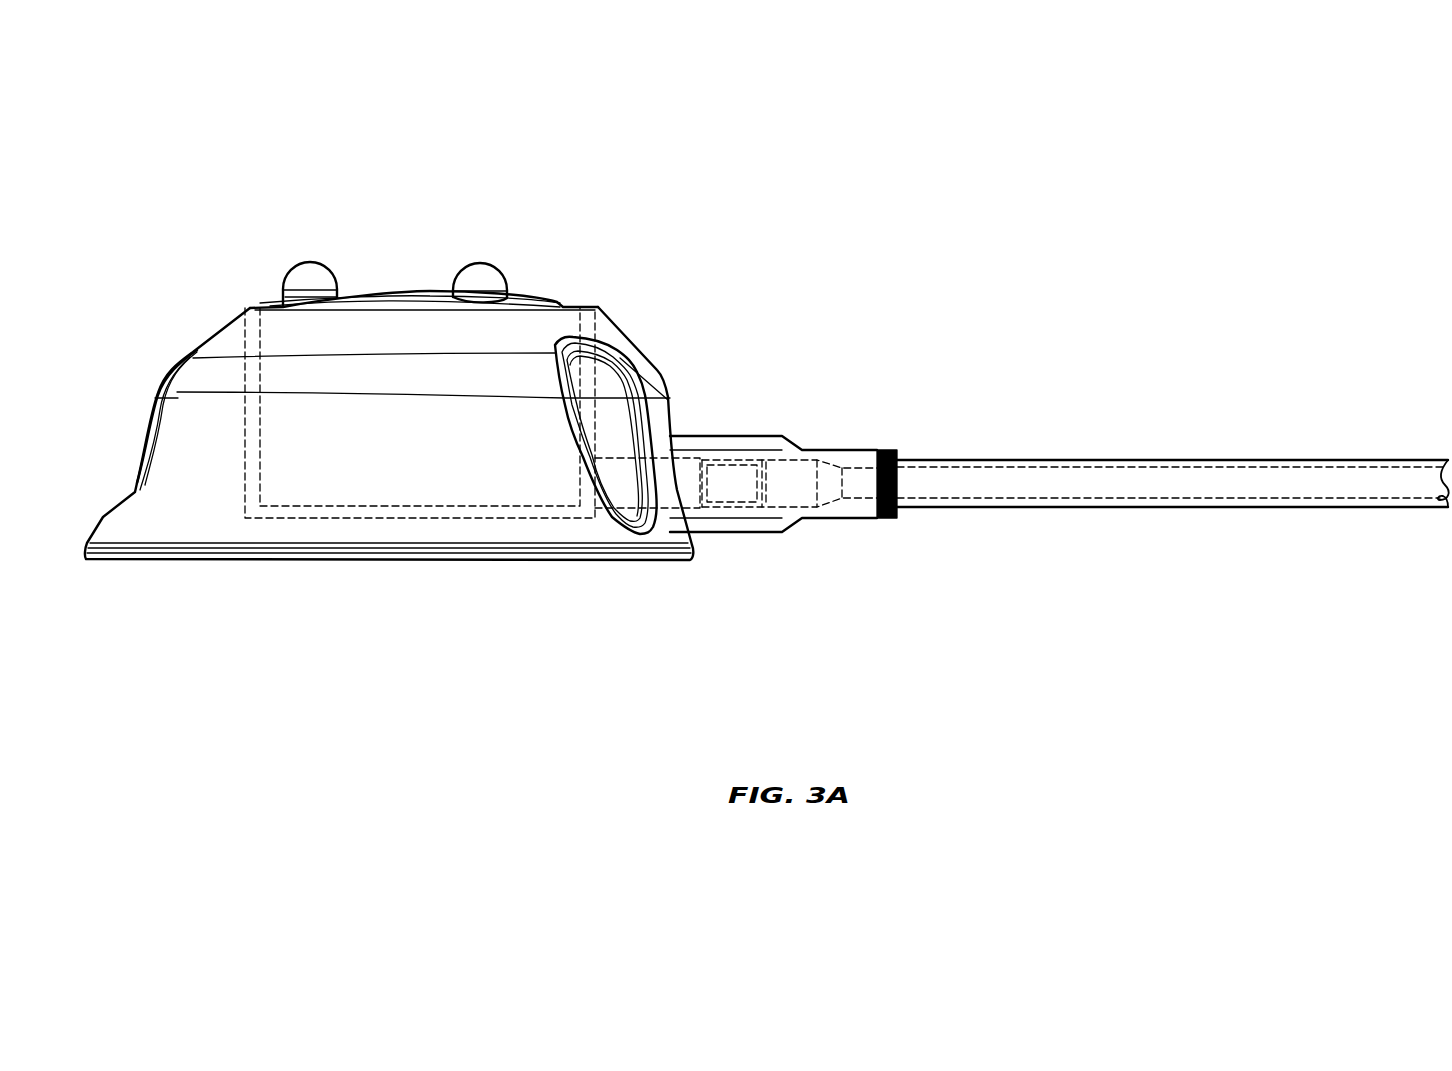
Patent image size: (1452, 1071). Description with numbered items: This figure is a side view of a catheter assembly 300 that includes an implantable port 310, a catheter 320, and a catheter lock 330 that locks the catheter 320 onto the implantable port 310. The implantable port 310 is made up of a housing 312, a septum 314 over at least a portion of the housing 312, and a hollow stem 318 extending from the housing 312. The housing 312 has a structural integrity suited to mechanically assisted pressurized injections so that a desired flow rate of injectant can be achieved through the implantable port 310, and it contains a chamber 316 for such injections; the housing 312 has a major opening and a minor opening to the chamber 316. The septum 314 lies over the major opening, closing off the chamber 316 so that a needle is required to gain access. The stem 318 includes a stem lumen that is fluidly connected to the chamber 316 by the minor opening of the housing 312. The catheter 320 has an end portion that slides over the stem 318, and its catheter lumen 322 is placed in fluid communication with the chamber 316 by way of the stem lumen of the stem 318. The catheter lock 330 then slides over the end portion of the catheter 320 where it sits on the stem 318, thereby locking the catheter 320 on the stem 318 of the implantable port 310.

The catheter assembly 300 is at (583, 157).
The implantable port 310 is at (402, 593).
The housing 312 is at (152, 507).
The septum 314 is at (415, 290).
The chamber 316 is at (532, 345).
The stem 318 is at (780, 490).
The catheter 320 is at (1073, 460).
The catheter lumen 322 is at (1123, 488).
The catheter lock 330 is at (762, 445).